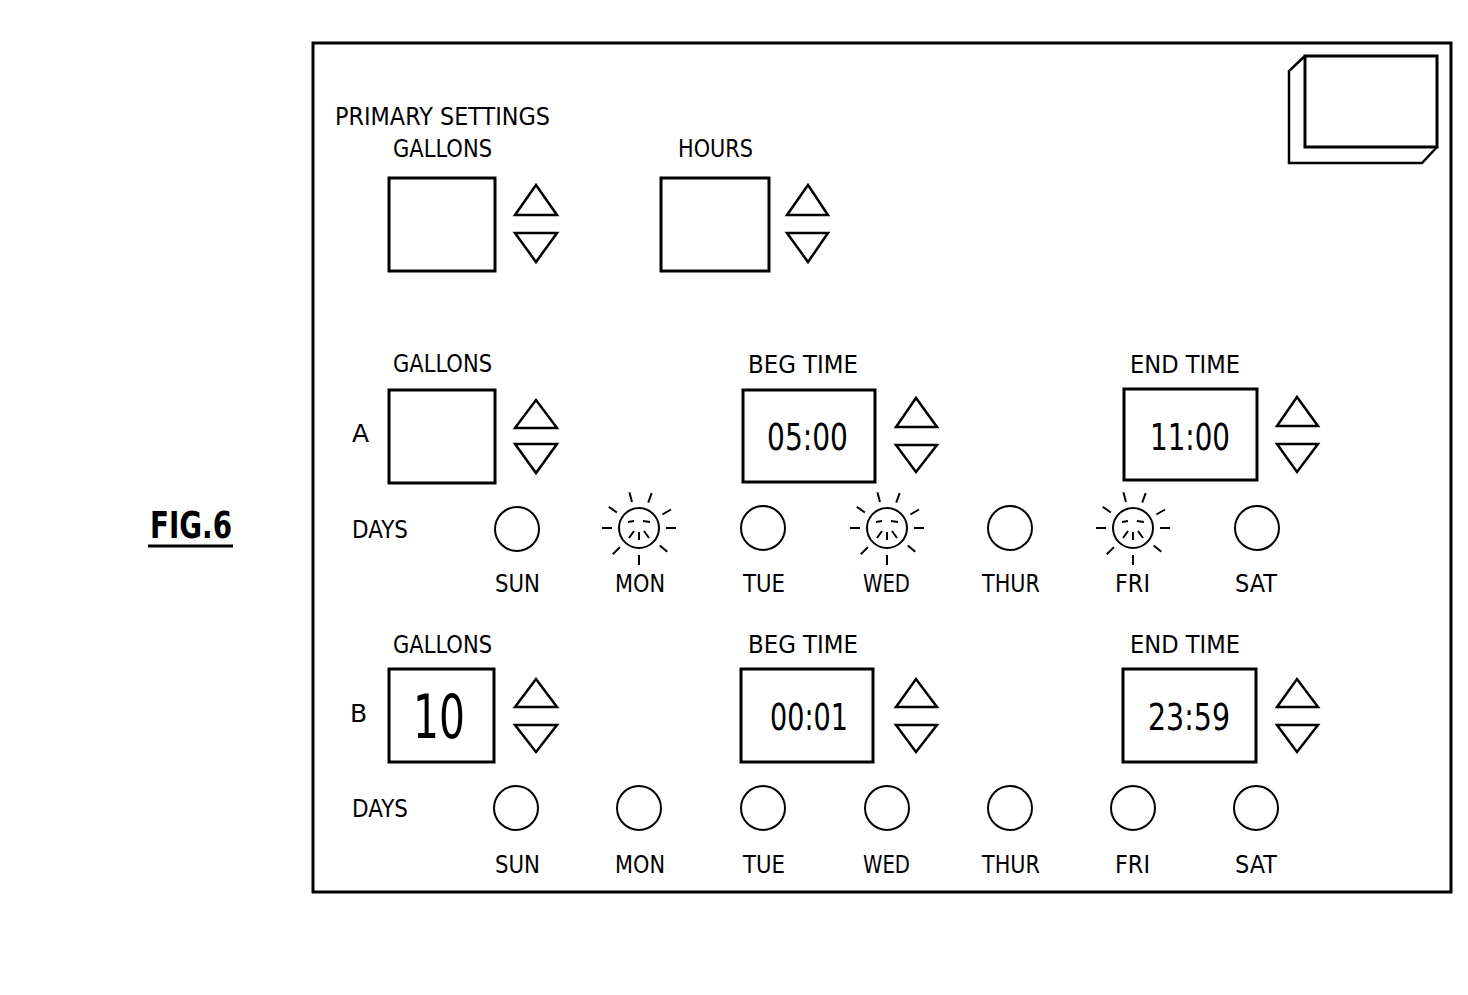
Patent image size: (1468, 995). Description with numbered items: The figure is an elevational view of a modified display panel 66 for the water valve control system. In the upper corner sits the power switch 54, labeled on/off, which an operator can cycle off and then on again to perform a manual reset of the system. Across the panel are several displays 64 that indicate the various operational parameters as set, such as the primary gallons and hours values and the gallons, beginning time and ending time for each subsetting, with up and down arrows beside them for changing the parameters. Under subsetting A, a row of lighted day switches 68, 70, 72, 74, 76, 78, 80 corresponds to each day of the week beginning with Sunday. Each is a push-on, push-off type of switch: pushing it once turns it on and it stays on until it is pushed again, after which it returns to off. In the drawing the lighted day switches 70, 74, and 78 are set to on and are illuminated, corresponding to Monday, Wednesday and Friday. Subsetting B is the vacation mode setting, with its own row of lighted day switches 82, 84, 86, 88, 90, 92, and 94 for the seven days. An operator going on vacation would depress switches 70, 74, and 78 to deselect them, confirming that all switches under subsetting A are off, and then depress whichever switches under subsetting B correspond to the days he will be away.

The power switch 54 is at (1298, 101).
The display 64 is at (389, 221).
The modified display panel 66 is at (285, 351).
The lighted day switch 68 is at (501, 516).
The lighted day switch 70 is at (627, 513).
The lighted day switch 72 is at (747, 517).
The lighted day switch 74 is at (875, 513).
The lighted day switch 76 is at (995, 518).
The lighted day switch 78 is at (1121, 513).
The lighted day switch 80 is at (1241, 517).
The lighted day switch 82 is at (502, 800).
The lighted day switch 84 is at (625, 793).
The lighted day switch 86 is at (749, 800).
The lighted day switch 88 is at (872, 800).
The lighted day switch 90 is at (995, 800).
The lighted day switch 92 is at (1120, 794).
The lighted day switch 94 is at (1242, 798).